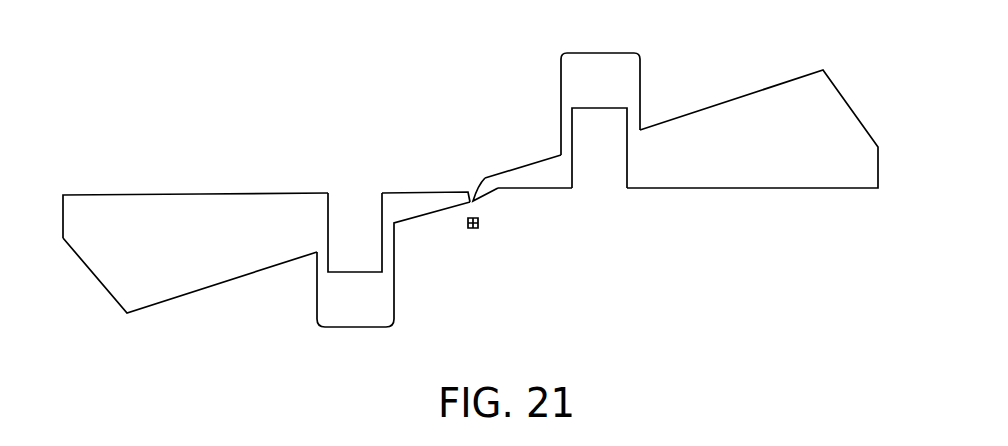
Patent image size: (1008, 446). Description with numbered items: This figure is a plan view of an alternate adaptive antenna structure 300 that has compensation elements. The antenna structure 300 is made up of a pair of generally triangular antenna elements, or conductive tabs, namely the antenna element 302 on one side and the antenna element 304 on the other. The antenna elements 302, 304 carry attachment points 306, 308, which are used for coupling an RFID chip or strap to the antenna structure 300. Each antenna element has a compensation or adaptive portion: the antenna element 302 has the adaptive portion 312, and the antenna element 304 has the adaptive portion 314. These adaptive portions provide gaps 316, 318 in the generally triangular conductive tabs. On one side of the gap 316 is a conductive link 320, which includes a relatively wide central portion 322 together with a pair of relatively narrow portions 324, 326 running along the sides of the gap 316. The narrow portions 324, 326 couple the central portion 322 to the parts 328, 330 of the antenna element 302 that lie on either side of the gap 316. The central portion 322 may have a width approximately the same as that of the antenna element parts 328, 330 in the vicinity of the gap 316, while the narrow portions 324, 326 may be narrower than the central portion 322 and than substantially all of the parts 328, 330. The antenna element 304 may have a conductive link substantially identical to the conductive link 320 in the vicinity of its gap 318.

The antenna structure 300 is at (333, 98).
The antenna element 302 is at (168, 185).
The antenna element 304 is at (740, 87).
The attachment point 306 is at (471, 205).
The attachment point 308 is at (482, 205).
The adaptive portion 312 is at (330, 177).
The adaptive portion 314 is at (562, 47).
The gap 316 is at (363, 197).
The gap 318 is at (598, 175).
The conductive link 320 is at (328, 337).
The central portion 322 is at (365, 303).
The narrow portion 324 is at (323, 260).
The narrow portion 326 is at (388, 252).
The antenna element part 328 is at (117, 270).
The antenna element part 330 is at (412, 200).